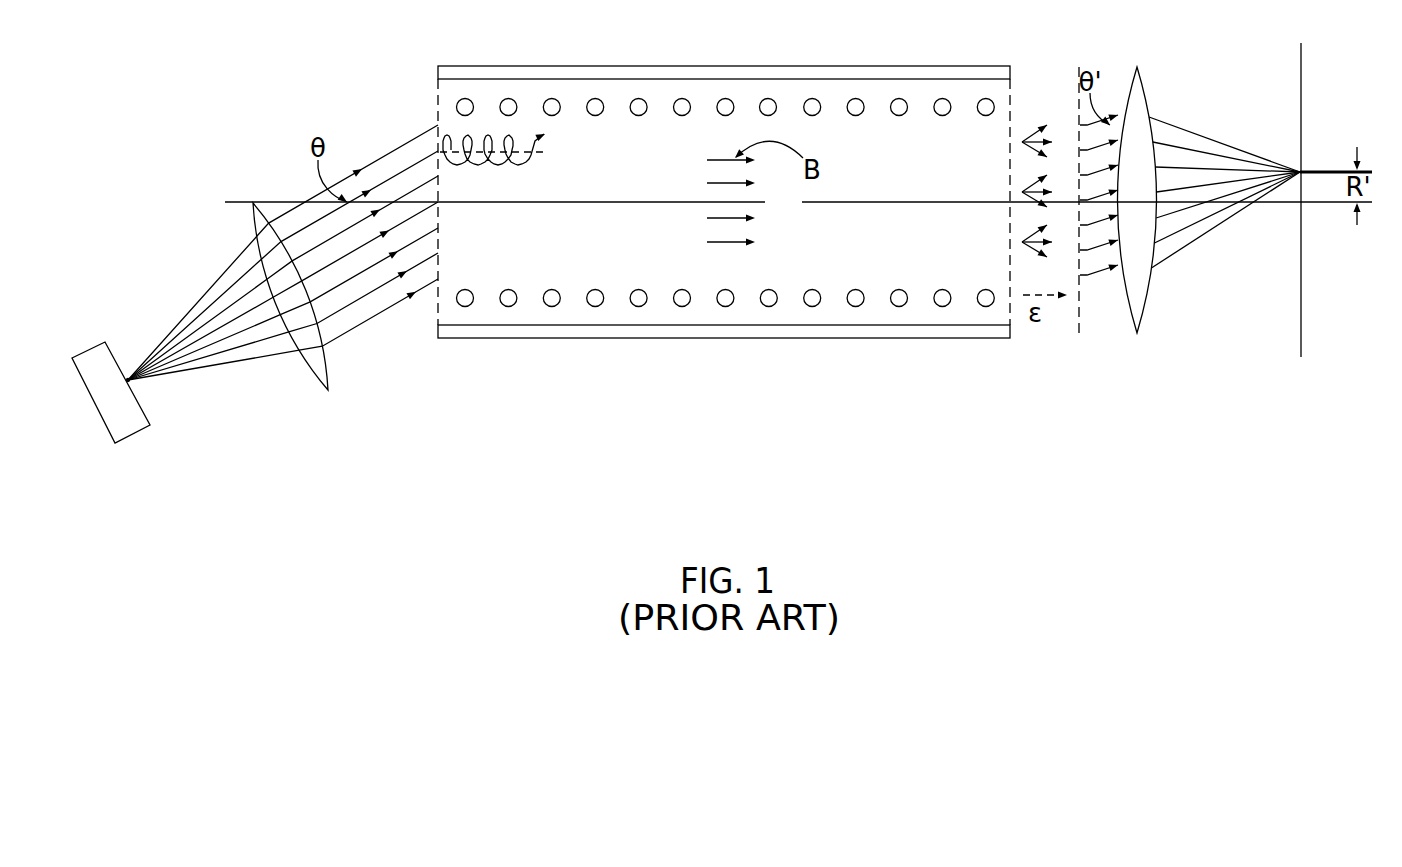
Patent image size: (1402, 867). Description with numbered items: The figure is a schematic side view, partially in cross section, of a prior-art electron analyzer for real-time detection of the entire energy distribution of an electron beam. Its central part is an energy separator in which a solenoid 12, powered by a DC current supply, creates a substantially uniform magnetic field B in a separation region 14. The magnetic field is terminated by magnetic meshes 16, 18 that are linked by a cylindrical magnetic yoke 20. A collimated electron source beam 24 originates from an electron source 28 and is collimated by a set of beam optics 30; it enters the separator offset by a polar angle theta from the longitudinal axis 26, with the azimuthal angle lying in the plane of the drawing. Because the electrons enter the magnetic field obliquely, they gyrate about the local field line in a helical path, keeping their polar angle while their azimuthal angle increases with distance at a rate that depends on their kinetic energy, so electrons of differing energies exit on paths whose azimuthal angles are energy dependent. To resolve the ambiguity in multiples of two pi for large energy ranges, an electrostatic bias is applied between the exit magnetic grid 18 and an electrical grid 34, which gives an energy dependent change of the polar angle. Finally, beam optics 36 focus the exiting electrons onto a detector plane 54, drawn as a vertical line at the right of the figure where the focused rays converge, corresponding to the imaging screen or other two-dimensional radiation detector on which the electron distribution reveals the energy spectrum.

The solenoid 12 is at (767, 98).
The separation region 14 is at (726, 203).
The magnetic mesh 16 is at (440, 220).
The exit magnetic grid 18 is at (1013, 107).
The cylindrical magnetic yoke 20 is at (687, 66).
The collimated electron source beam 24 is at (360, 342).
The longitudinal axis 26 is at (237, 202).
The electron source 28 is at (151, 396).
The beam optics 30 is at (243, 296).
The electrical grid 34 is at (493, 148).
The beam optics 36 is at (1143, 94).
The detector plane 54 is at (1336, 187).